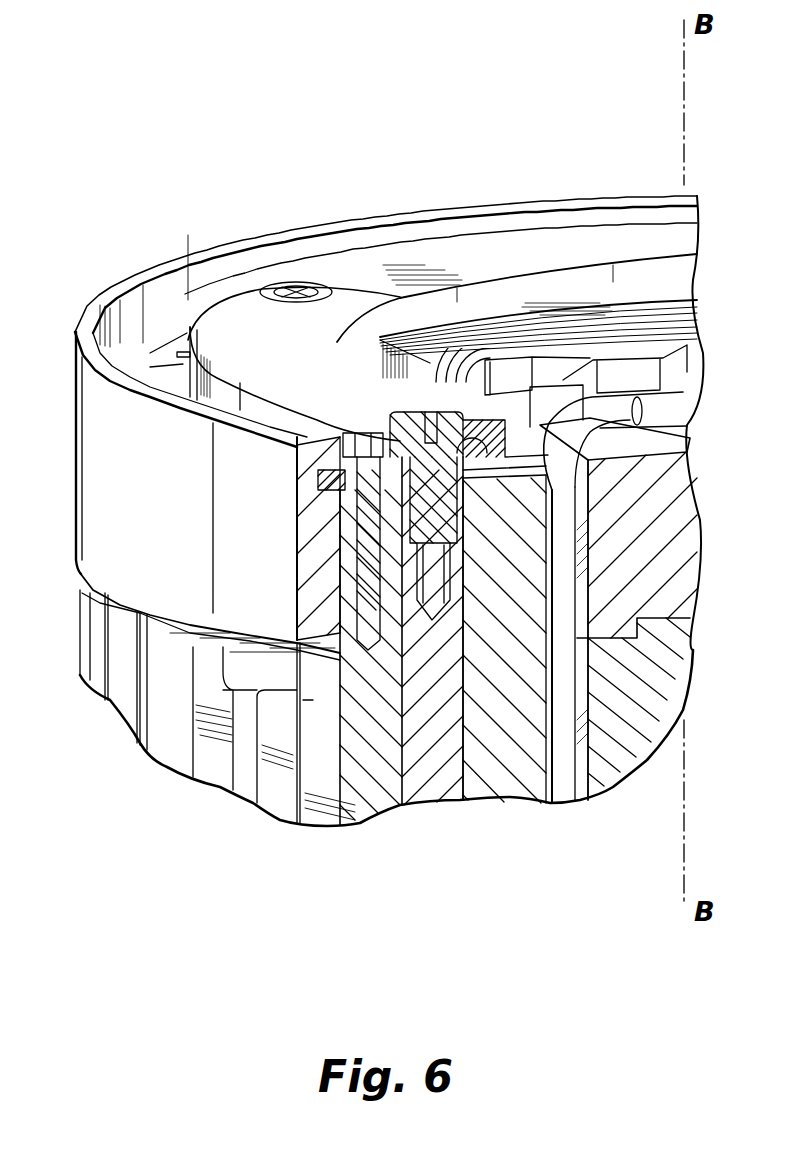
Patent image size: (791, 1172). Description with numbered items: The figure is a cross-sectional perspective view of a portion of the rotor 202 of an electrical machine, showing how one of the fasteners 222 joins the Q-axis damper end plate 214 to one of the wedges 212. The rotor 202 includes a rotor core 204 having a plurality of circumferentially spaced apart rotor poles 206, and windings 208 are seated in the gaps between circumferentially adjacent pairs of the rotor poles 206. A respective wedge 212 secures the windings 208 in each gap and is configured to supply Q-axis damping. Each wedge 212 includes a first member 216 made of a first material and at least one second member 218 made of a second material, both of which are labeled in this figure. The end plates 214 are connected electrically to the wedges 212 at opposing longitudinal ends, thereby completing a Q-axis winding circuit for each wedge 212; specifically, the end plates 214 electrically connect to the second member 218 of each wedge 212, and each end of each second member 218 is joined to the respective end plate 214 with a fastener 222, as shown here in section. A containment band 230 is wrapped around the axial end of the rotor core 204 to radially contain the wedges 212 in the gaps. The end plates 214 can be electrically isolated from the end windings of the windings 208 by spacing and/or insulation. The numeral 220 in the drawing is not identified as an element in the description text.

The rotor 202 is at (90, 146).
The rotor core 204 is at (668, 665).
The rotor poles 206 is at (207, 757).
The windings 208 is at (477, 340).
The wedge 212 is at (500, 701).
The end plates 214 is at (618, 242).
The first member 216 is at (498, 762).
The second member 218 is at (432, 773).
The plate 220 is at (504, 503).
The fastener 222 is at (276, 283).
The containment band 230 is at (116, 290).